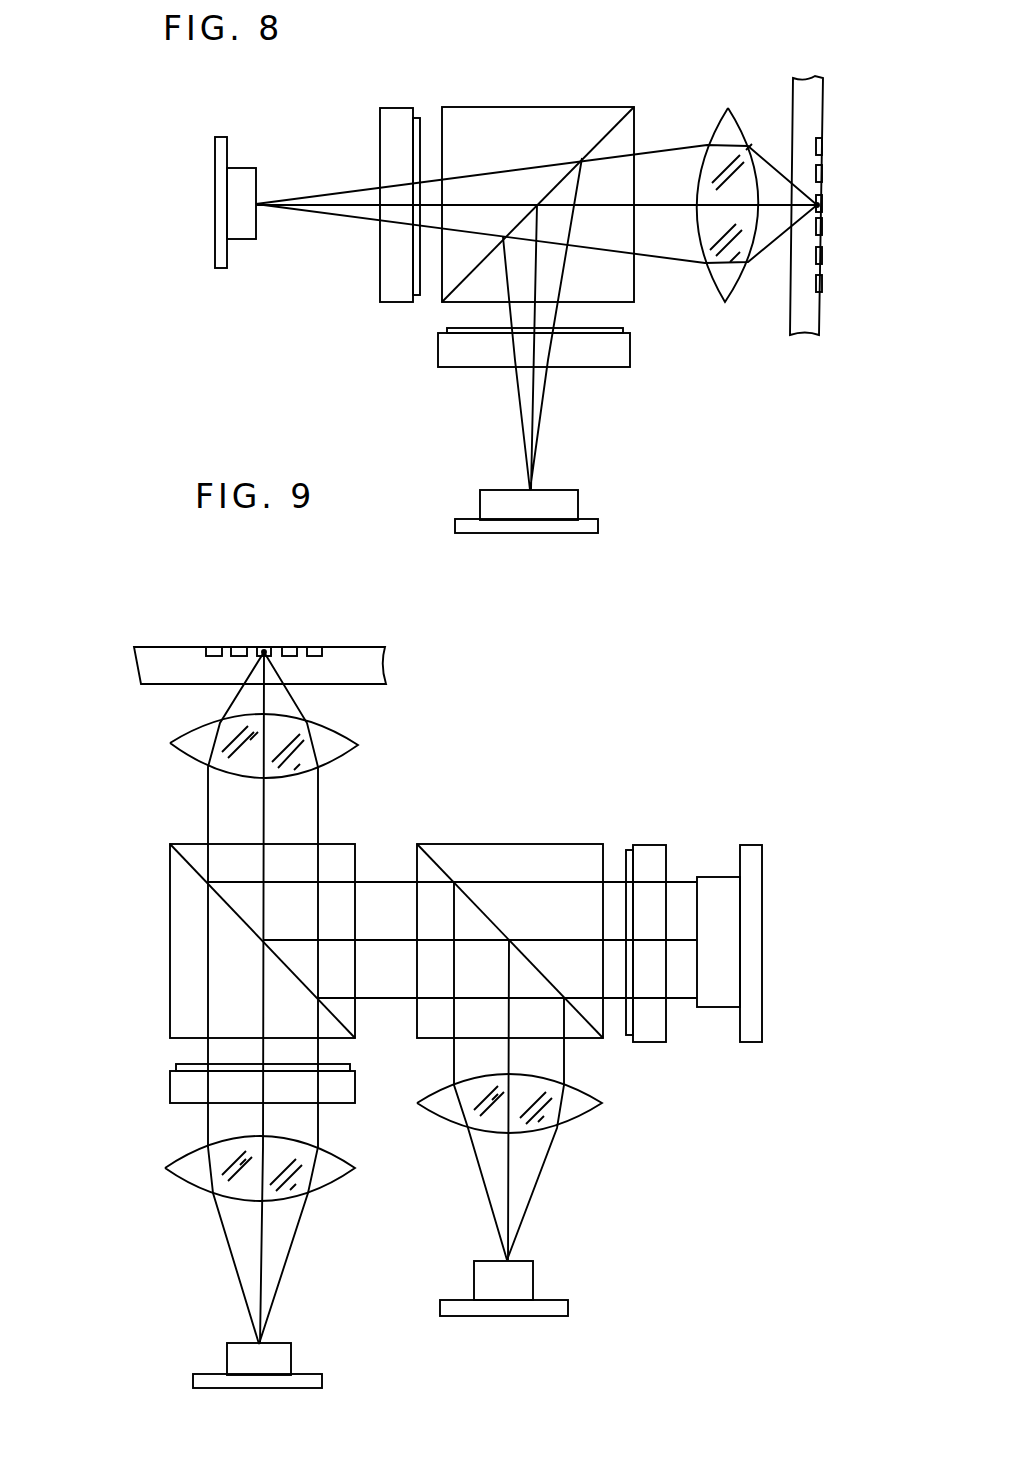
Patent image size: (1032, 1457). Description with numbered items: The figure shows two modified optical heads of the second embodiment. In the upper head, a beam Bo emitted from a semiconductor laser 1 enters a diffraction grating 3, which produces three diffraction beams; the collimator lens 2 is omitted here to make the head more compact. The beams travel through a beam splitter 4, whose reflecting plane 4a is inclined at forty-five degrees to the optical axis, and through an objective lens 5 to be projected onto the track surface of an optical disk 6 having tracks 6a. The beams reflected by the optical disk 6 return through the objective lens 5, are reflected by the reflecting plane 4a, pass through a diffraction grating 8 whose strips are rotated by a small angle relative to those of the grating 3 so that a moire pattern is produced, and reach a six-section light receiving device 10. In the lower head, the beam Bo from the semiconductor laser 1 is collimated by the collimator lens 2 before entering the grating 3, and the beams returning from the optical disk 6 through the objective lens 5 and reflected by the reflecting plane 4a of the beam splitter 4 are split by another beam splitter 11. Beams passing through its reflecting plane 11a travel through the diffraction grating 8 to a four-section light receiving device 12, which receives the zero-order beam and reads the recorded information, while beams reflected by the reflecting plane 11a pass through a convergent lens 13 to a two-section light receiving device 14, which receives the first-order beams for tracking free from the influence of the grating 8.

In FIG. 8, the semiconductor laser 1 is at (246, 172).
In FIG. 9, the semiconductor laser 1 is at (288, 1360).
In FIG. 8, the beam Bo is at (337, 190).
In FIG. 9, the beam Bo is at (228, 1262).
In FIG. 9, the collimator lens 2 is at (183, 1175).
In FIG. 8, the diffraction grating 3 is at (398, 113).
In FIG. 9, the diffraction grating 3 is at (172, 1087).
In FIG. 8, the beam splitter 4 is at (500, 107).
In FIG. 9, the beam splitter 4 is at (170, 968).
In FIG. 8, the reflecting plane 4a is at (607, 132).
In FIG. 9, the reflecting plane 4a is at (190, 865).
In FIG. 8, the objective lens 5 is at (720, 128).
In FIG. 9, the objective lens 5 is at (182, 745).
In FIG. 8, the optical disk 6 is at (808, 93).
In FIG. 9, the optical disk 6 is at (148, 668).
In FIG. 8, the tracks 6a is at (820, 207).
In FIG. 9, the tracks 6a is at (265, 650).
In FIG. 8, the diffraction grating 8 is at (625, 353).
In FIG. 9, the diffraction grating 8 is at (648, 852).
In FIG. 8, the six-section light receiving device 10 is at (570, 502).
In FIG. 9, the beam splitter 11 is at (545, 843).
In FIG. 9, the reflecting plane 11a is at (438, 858).
In FIG. 9, the four-section light receiving device 12 is at (718, 880).
In FIG. 9, the convergent lens 13 is at (573, 1112).
In FIG. 9, the two-section light receiving device 14 is at (525, 1280).